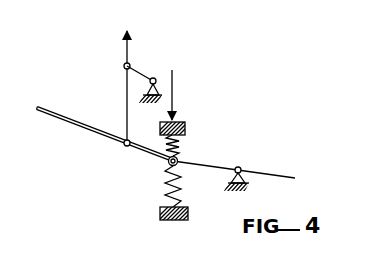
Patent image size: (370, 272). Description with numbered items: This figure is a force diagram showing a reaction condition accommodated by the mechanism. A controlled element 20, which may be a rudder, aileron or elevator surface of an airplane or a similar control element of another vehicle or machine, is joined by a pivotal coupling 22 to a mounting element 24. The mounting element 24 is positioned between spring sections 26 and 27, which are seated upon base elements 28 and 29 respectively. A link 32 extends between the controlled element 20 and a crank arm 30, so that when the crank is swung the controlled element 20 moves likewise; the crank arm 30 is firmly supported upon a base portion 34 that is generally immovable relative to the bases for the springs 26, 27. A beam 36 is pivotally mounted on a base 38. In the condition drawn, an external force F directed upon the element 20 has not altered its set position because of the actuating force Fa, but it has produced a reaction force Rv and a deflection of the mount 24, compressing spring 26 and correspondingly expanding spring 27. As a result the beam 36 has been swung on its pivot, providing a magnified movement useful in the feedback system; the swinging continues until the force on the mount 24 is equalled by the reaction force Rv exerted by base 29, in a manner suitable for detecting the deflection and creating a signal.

The controlled element 20 is at (81, 125).
The pivotal coupling 22 is at (168, 163).
The mounting element 24 is at (180, 165).
The spring section 26 is at (183, 148).
The spring section 27 is at (162, 187).
The base element 28 is at (187, 125).
The base element 29 is at (177, 220).
The crank arm 30 is at (141, 66).
The link 32 is at (126, 96).
The base portion 34 is at (159, 99).
The beam 36 is at (233, 166).
The base 38 is at (248, 187).
The external force F is at (59, 112).
The actuating force Fa is at (127, 37).
The reaction force Rv is at (174, 84).